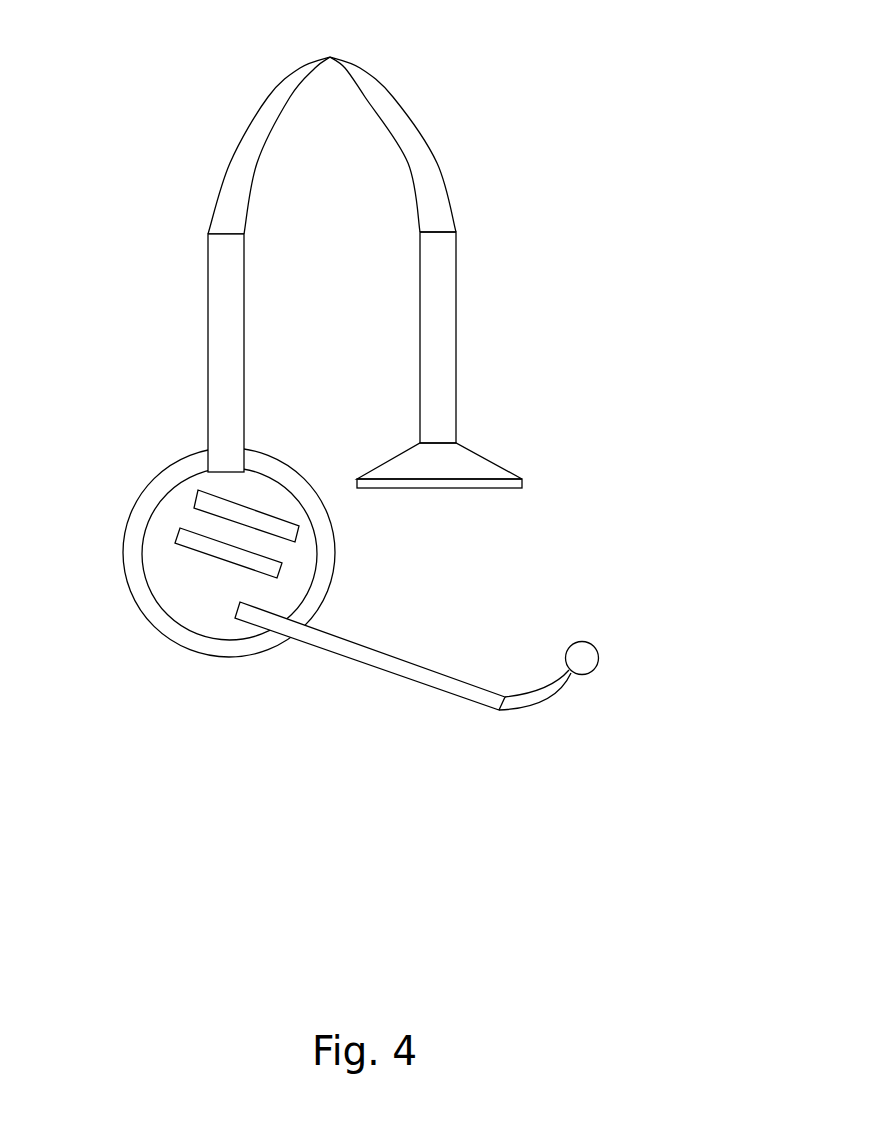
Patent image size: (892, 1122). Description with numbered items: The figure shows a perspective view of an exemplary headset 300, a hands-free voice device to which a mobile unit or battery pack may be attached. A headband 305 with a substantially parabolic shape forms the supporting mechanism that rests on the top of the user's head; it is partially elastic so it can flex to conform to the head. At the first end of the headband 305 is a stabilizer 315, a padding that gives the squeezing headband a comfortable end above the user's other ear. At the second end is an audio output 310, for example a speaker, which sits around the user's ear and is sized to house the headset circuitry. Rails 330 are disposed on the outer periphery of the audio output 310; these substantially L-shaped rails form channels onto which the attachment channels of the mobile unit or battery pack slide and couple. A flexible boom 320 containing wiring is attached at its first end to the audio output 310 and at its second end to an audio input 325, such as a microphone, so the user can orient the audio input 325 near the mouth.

The headset 300 is at (673, 65).
The headband 305 is at (417, 137).
The audio output 310 is at (183, 599).
The stabilizer 315 is at (439, 463).
The boom 320 is at (372, 655).
The audio input 325 is at (582, 658).
The rails 330 is at (189, 535).